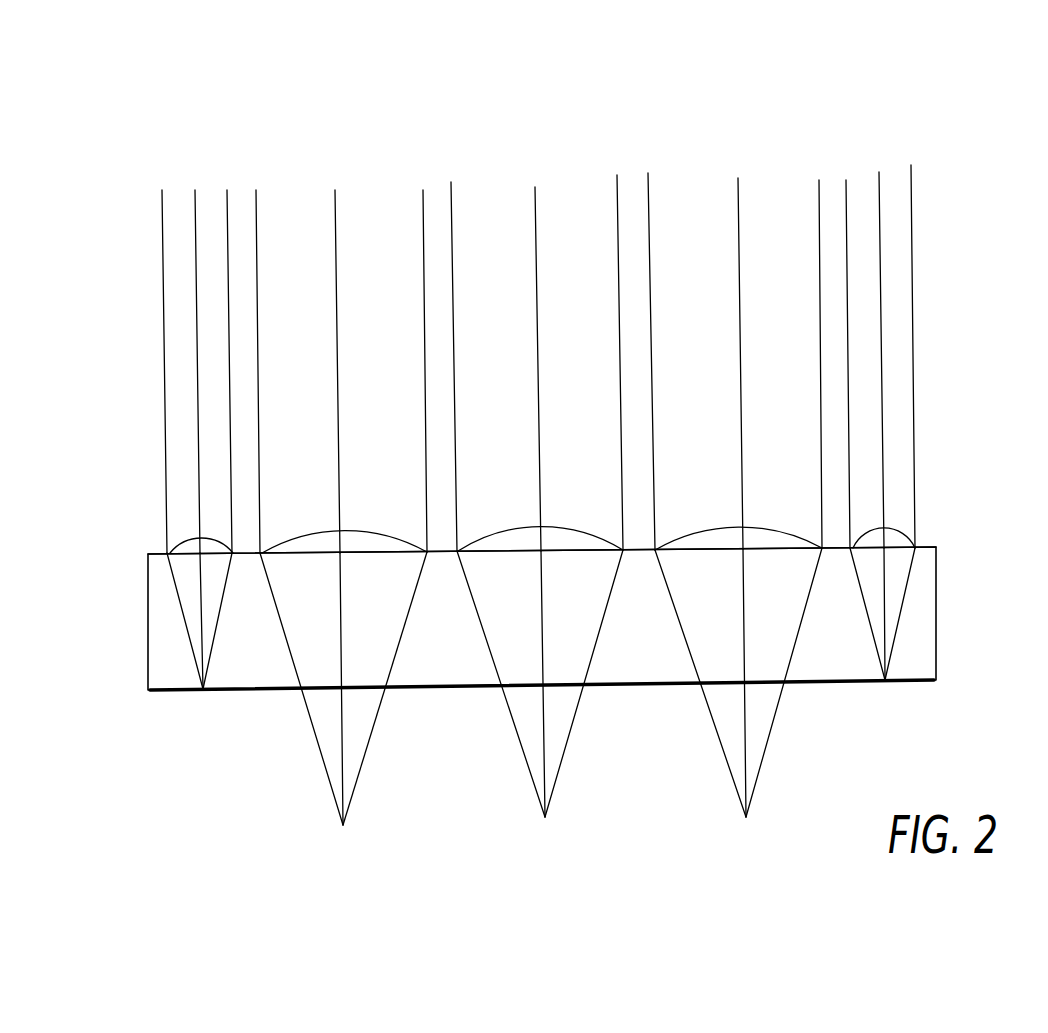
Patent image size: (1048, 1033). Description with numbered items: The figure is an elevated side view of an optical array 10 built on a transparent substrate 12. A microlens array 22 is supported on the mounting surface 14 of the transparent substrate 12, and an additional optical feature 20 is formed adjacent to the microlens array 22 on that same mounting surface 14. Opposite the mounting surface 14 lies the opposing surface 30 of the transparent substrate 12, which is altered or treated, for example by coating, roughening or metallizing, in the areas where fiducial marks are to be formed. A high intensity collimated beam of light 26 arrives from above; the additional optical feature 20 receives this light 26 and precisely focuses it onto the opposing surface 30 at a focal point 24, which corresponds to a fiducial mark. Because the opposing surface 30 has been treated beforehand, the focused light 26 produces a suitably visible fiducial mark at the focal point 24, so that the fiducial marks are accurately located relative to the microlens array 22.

The optical array 10 is at (697, 114).
The transparent substrate 12 is at (925, 603).
The mounting surface 14 is at (176, 556).
The additional optical feature 20 is at (182, 545).
The microlens array 22 is at (363, 531).
The focal point 24 is at (204, 692).
The collimated beam of light 26 is at (195, 207).
The opposing surface 30 is at (168, 693).